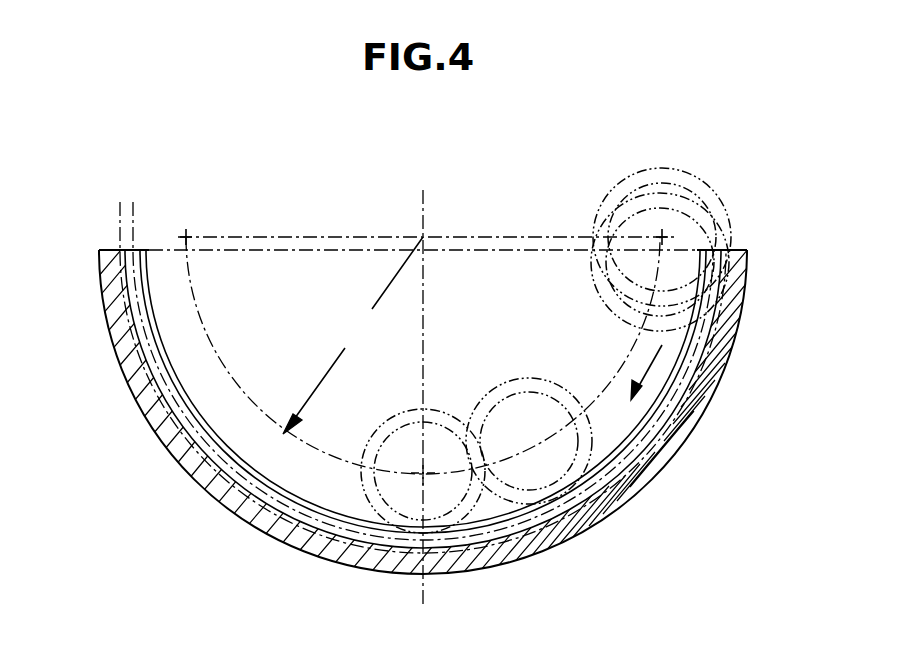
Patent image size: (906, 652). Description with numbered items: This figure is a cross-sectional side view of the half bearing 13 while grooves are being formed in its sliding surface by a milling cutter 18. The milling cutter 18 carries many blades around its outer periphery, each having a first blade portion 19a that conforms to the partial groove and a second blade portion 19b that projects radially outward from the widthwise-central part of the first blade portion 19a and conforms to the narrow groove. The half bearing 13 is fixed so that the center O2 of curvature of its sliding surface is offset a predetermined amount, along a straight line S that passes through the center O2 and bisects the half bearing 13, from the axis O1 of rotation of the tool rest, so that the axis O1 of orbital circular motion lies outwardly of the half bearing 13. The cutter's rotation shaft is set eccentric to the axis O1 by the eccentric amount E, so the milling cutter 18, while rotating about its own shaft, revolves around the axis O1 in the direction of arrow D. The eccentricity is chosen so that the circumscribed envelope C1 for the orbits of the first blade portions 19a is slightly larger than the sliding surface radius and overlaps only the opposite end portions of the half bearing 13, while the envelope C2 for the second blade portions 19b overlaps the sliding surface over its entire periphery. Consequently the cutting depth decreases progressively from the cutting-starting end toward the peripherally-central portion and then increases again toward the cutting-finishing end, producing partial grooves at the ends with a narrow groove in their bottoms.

The half bearing 13 is at (615, 505).
The milling cutter 18 is at (581, 304).
The first blade portion 19a is at (686, 185).
The second blade portion 19b is at (722, 202).
The axis of rotation of the tool rest O1 is at (423, 237).
The center of curvature of the sliding surface O2 is at (423, 250).
The straight line S is at (425, 345).
The eccentric amount E is at (423, 355).
The direction of arrow D is at (646, 368).
The circumscribed envelope for the first blade portions C1 is at (135, 214).
The envelope for the second blade portions C2 is at (119, 213).